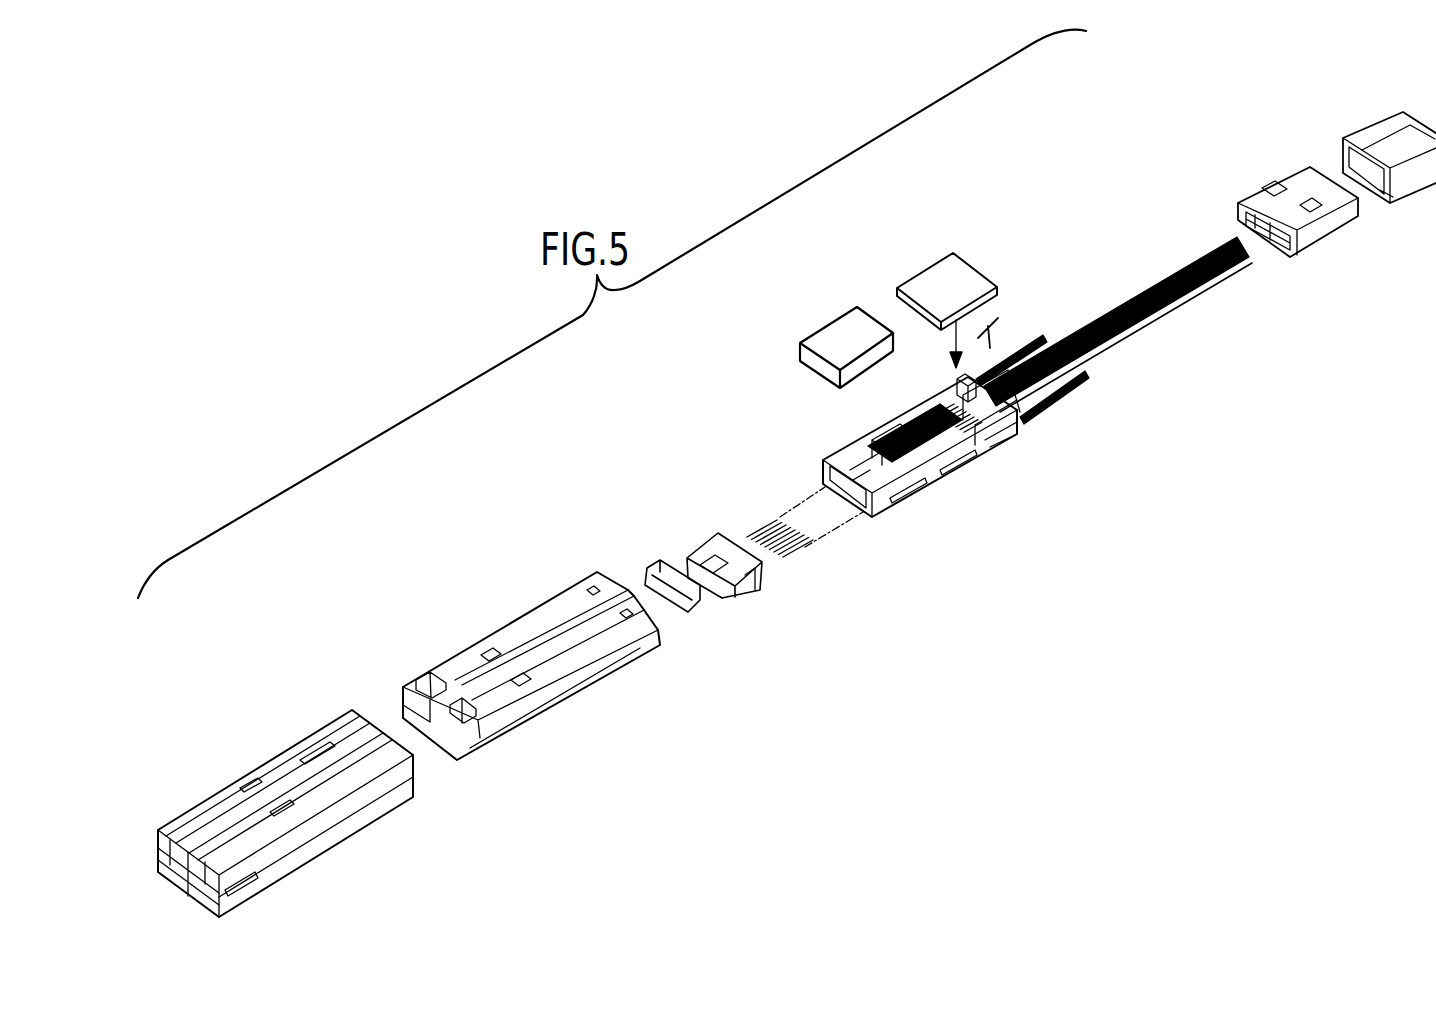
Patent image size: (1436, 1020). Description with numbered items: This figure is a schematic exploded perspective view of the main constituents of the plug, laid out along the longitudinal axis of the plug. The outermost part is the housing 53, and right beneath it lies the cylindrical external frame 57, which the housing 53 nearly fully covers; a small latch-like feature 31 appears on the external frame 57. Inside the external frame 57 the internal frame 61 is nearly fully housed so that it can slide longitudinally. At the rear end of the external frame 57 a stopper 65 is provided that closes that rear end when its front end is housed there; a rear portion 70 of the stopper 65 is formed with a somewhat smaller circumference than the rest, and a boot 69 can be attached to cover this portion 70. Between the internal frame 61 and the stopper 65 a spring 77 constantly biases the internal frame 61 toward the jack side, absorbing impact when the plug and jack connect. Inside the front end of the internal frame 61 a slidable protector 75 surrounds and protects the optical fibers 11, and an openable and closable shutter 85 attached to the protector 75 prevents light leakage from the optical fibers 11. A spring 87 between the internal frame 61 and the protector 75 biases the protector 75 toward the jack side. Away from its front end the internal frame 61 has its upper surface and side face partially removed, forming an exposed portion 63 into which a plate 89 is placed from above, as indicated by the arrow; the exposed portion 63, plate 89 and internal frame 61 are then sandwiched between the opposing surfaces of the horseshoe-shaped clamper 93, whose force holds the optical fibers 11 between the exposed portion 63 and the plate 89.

The optical fibers 11 is at (1160, 325).
The latch lever 31 is at (428, 675).
The housing 53 is at (348, 825).
The external frame 57 is at (522, 666).
The internal frame 61 is at (944, 451).
The exposed portion 63 is at (990, 447).
The stopper 65 is at (1297, 228).
The boot 69 is at (1343, 142).
The portion of the rear end of the stopper 70 is at (1321, 229).
The protector 75 is at (710, 548).
The spring 77 is at (1050, 405).
The shutter 85 is at (683, 612).
The spring 87 is at (797, 545).
The plate 89 is at (950, 278).
The clamper 93 is at (848, 328).